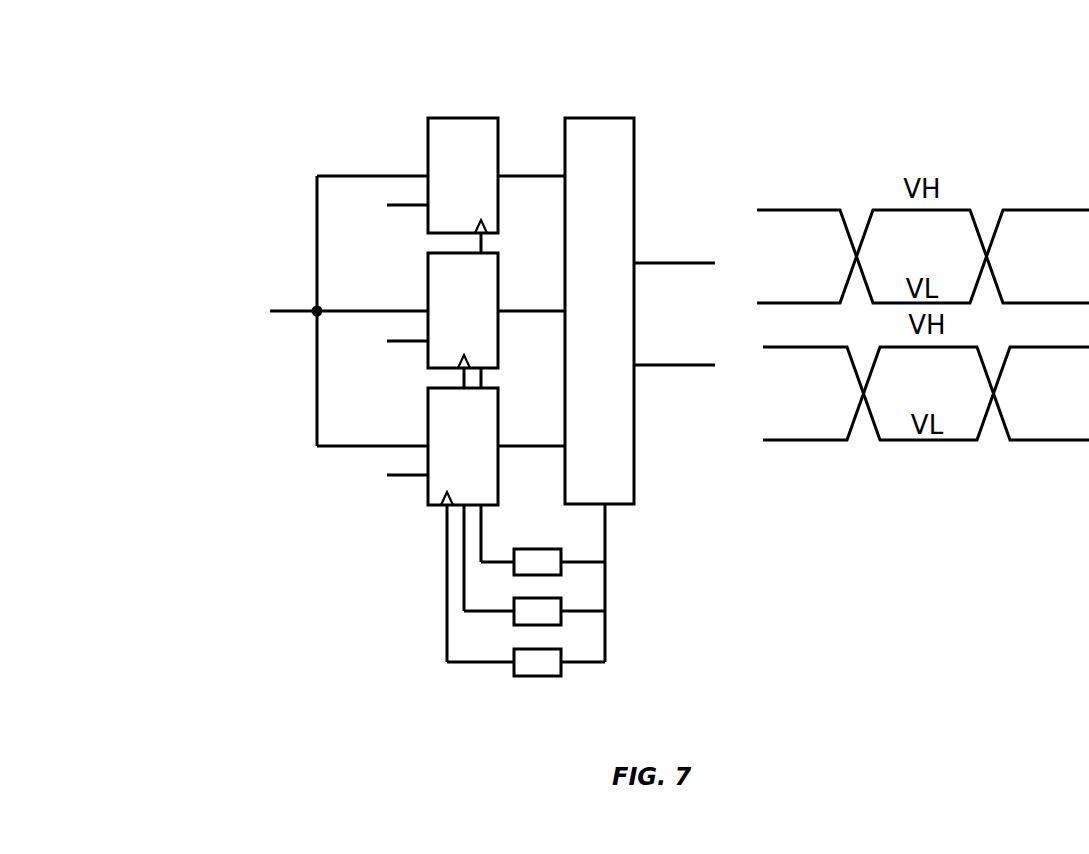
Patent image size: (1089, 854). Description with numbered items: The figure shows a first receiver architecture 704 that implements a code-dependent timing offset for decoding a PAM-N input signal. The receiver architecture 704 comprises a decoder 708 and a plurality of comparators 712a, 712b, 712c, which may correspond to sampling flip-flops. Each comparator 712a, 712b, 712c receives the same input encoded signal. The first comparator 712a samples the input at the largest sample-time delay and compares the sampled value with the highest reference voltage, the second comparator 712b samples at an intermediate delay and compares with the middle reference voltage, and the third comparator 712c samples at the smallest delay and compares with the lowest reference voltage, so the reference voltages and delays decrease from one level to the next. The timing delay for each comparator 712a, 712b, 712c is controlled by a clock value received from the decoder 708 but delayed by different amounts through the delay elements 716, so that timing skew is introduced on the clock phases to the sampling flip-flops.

The receiver architecture 704 is at (344, 100).
The decoder 708 is at (590, 118).
The first comparator 712a is at (452, 120).
The second comparator 712b is at (442, 358).
The third comparator 712c is at (428, 502).
The clock time-shift elements 716 is at (538, 712).